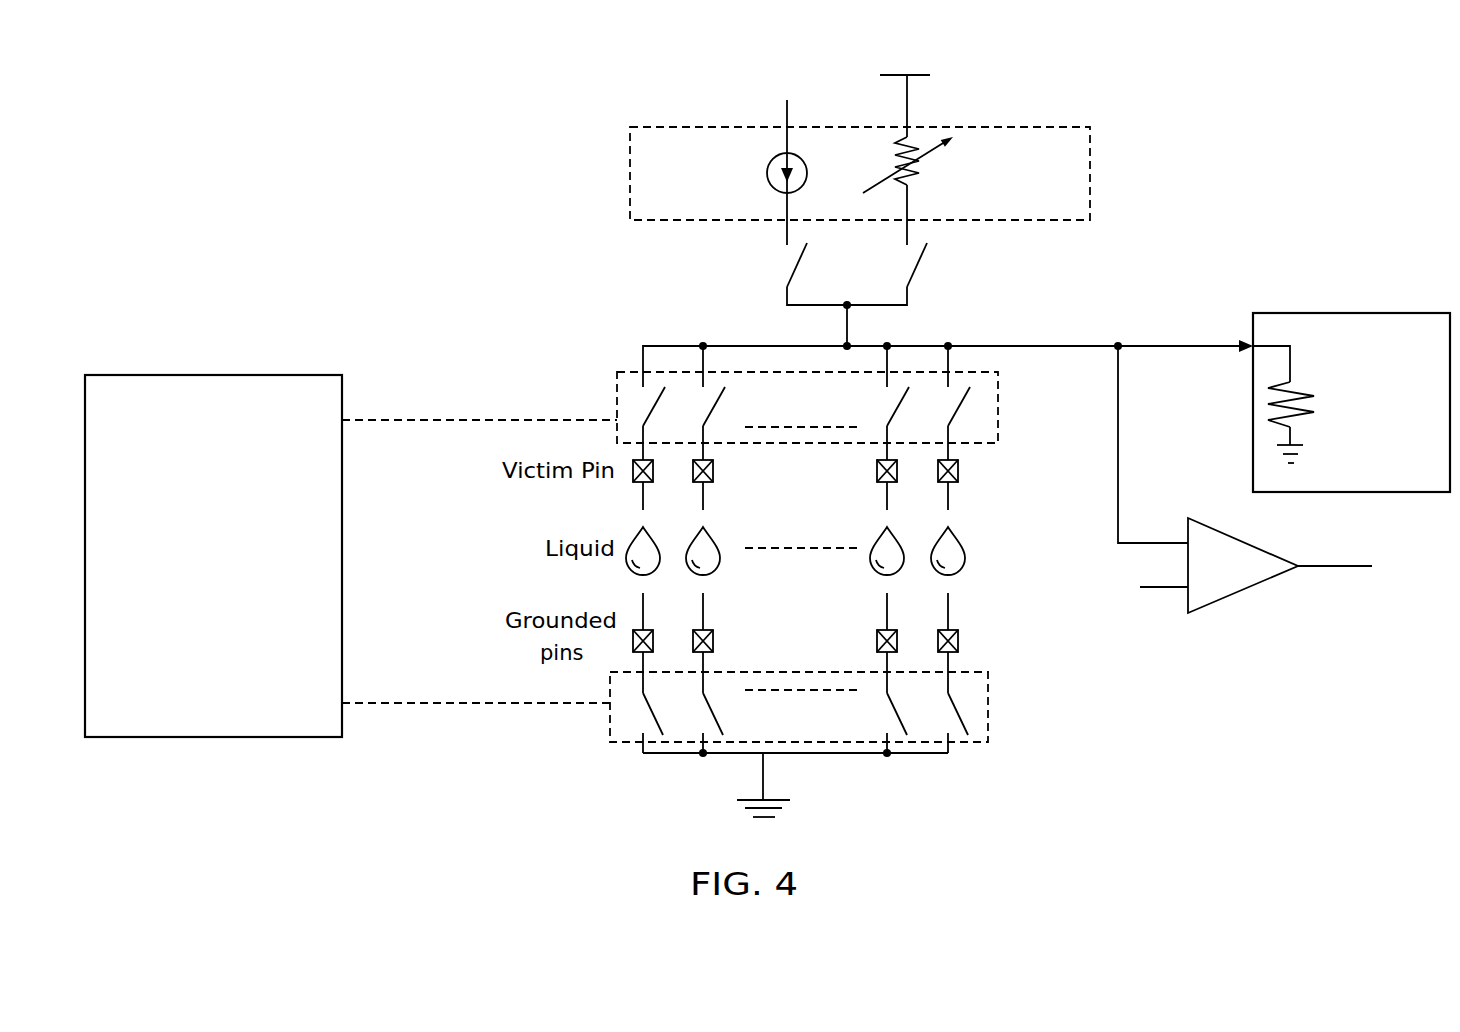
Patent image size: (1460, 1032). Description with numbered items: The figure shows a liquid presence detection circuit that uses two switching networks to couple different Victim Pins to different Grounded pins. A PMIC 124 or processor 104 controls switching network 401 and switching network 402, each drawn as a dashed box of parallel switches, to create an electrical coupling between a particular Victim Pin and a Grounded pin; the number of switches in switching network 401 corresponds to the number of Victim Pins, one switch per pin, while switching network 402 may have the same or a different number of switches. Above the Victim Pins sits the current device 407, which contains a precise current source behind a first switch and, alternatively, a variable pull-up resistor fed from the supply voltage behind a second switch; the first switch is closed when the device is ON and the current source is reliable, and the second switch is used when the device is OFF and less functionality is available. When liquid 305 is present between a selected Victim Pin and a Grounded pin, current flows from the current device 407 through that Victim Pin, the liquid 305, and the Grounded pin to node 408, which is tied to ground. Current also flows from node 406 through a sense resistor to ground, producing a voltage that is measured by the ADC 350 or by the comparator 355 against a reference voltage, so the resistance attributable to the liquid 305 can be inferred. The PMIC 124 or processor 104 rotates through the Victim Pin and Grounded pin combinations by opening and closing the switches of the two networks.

The PMIC 124 is at (213, 556).
The processor 104 is at (213, 556).
The current device 407 is at (626, 126).
The node 406 is at (666, 339).
The switching network 401 is at (611, 375).
The liquid 305 is at (970, 533).
The switching network 402 is at (997, 721).
The node 408 is at (837, 759).
The ADC 350 is at (1309, 402).
The comparator 355 is at (1230, 485).